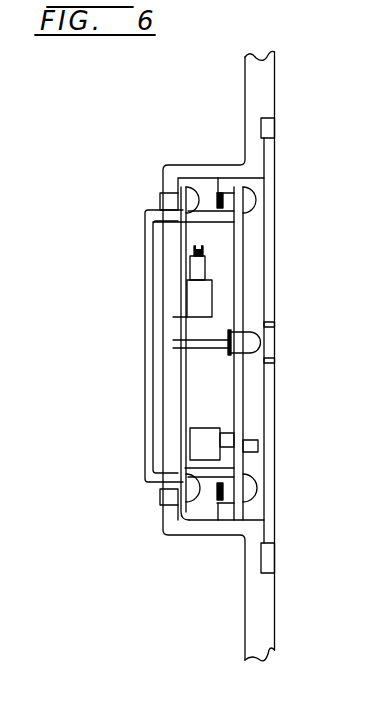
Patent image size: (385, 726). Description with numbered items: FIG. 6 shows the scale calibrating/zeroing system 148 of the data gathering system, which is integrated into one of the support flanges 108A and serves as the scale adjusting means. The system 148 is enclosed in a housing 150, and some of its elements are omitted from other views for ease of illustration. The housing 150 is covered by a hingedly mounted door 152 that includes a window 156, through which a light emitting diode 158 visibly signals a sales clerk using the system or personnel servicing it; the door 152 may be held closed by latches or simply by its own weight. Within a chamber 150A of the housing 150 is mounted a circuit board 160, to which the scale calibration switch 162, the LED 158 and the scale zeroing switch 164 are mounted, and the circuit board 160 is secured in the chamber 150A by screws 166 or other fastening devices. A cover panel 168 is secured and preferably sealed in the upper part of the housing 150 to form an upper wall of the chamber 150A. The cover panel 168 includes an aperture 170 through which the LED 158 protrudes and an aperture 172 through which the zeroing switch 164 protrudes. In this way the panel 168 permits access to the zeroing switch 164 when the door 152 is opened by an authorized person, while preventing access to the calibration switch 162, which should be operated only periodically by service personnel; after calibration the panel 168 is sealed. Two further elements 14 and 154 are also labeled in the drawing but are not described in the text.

The bracket 14 is at (376, 212).
The support flange 108A is at (247, 72).
The scale calibrating/zeroing system 148 is at (157, 543).
The housing 150 is at (147, 223).
The chamber 150A is at (222, 270).
The door 152 is at (277, 262).
The mounting tab 154 is at (270, 134).
The window 156 is at (270, 360).
The light emitting diode 158 is at (264, 325).
The circuit board 160 is at (181, 368).
The scale calibration switch 162 is at (190, 270).
The scale zeroing switch 164 is at (192, 428).
The screws 166 is at (197, 187).
The cover panel 168 is at (244, 410).
The aperture 170 is at (238, 353).
The aperture 172 is at (243, 462).